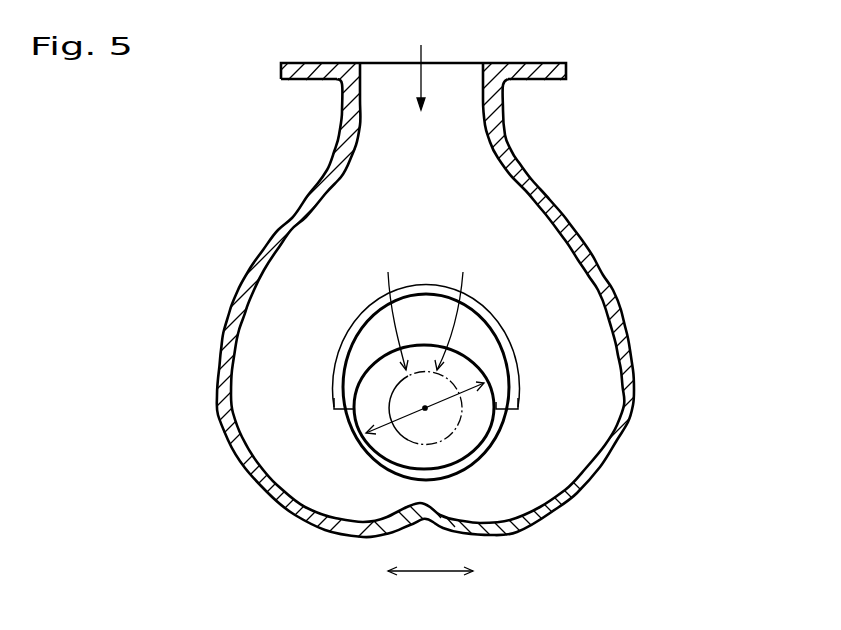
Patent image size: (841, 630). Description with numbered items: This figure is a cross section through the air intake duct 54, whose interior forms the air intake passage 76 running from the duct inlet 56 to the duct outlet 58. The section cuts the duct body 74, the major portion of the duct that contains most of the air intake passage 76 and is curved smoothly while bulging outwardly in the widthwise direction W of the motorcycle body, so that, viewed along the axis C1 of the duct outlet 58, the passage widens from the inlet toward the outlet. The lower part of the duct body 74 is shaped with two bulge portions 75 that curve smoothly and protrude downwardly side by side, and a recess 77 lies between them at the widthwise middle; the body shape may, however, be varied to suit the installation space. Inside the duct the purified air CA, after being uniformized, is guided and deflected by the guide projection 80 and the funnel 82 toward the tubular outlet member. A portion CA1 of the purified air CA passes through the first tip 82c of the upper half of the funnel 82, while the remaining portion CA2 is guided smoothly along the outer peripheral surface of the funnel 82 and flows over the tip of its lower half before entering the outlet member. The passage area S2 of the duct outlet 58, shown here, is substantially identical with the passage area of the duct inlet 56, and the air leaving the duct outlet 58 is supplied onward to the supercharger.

The air intake duct 54 is at (574, 208).
The duct inlet 56 is at (371, 90).
The duct outlet 58 is at (490, 424).
The duct body 74 is at (283, 216).
The air intake passage 76 is at (470, 148).
The bulge portions 75 is at (372, 537).
The recess 77 is at (427, 520).
The guide projection 80 is at (410, 445).
The funnel 82 is at (474, 332).
The first tip 82c is at (358, 318).
The purified air CA is at (422, 53).
The portion of the purified air CA1 is at (465, 272).
The remaining portion of the purified air CA2 is at (398, 443).
The axis of the duct outlet C1 is at (425, 408).
The passage area of the duct outlet S2 is at (394, 437).
The widthwise direction W is at (430, 587).